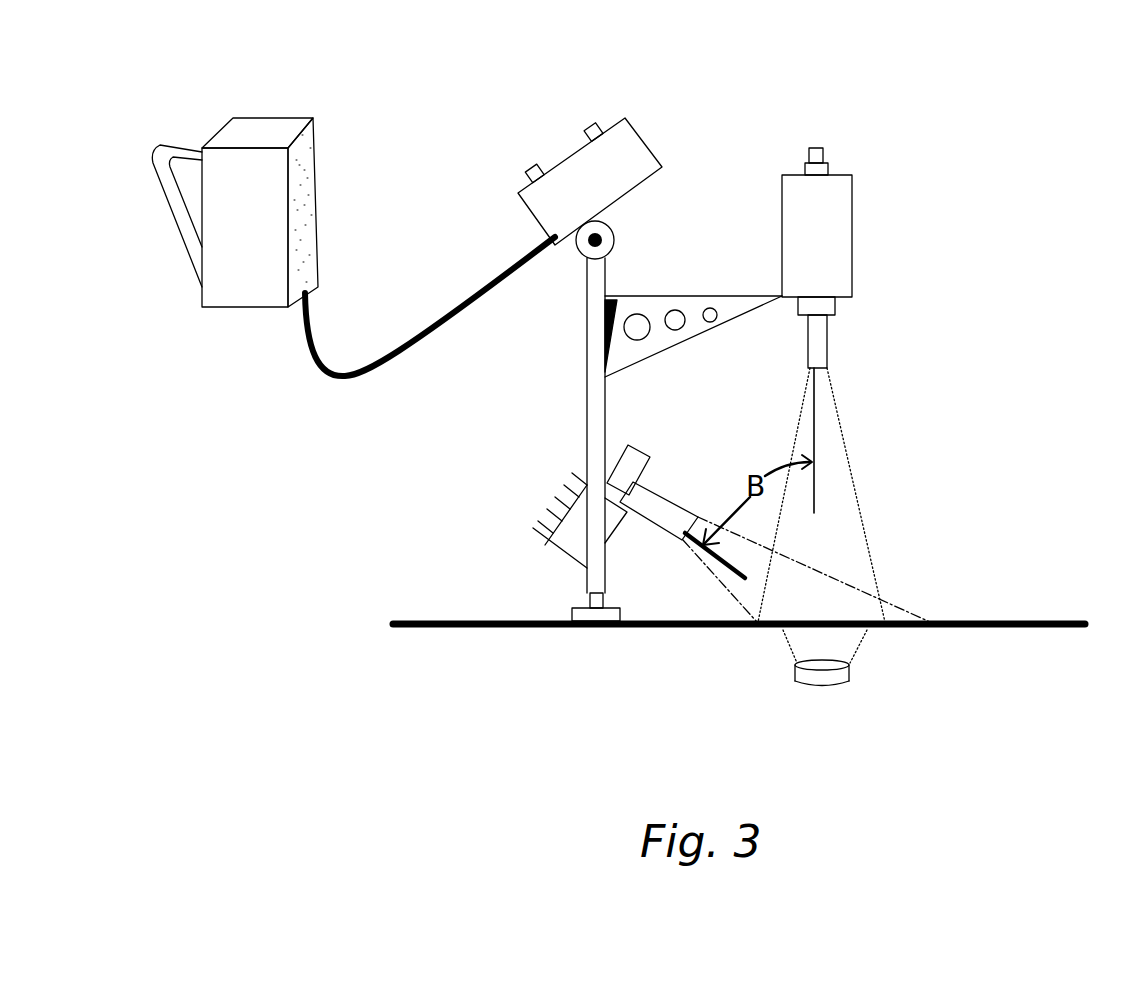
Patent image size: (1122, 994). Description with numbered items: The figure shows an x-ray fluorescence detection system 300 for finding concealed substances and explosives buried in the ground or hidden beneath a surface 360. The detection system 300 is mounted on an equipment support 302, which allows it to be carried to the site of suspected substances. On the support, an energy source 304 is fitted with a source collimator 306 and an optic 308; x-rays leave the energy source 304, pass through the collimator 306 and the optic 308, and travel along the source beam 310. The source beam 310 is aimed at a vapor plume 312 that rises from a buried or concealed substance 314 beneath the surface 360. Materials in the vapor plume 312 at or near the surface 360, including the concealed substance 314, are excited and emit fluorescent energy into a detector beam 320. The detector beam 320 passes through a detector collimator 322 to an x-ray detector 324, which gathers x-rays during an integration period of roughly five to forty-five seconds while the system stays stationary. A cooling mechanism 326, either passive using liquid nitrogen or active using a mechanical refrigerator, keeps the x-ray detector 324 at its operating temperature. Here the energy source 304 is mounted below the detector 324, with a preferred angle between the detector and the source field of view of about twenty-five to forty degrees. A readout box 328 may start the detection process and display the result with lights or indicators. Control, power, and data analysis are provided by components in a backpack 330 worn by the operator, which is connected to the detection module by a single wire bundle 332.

The x-ray fluorescence detection system 300 is at (972, 122).
The equipment support 302 is at (596, 405).
The energy source 304 is at (568, 532).
The source collimator 306 is at (638, 445).
The optic 308 is at (650, 502).
The source beam 310 is at (728, 540).
The vapor plume 312 is at (837, 643).
The concealed substance 314 is at (837, 675).
The detector beam 320 is at (828, 458).
The detector collimator 322 is at (817, 343).
The x-ray detector 324 is at (835, 307).
The cooling mechanism 326 is at (822, 262).
The readout box 328 is at (605, 163).
The backpack 330 is at (257, 135).
The wire bundle 332 is at (416, 338).
The surface 360 is at (958, 617).